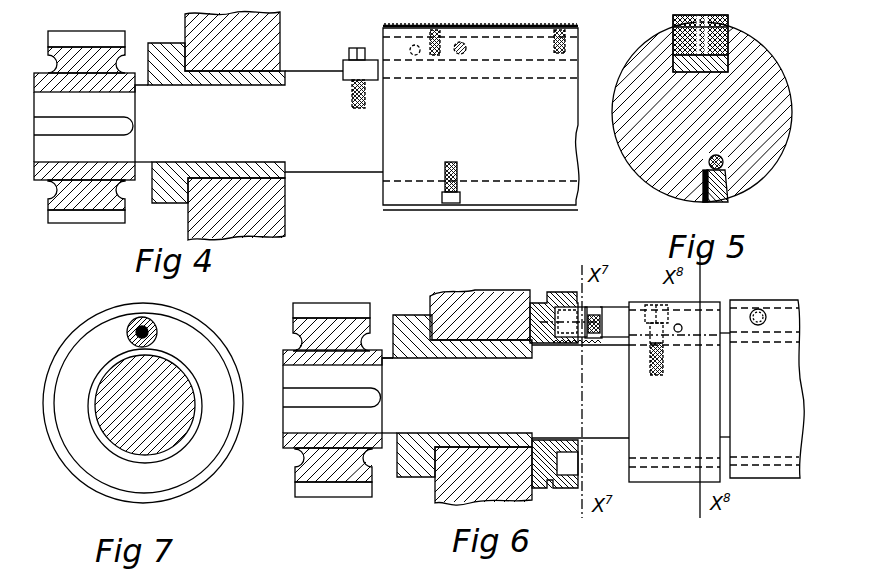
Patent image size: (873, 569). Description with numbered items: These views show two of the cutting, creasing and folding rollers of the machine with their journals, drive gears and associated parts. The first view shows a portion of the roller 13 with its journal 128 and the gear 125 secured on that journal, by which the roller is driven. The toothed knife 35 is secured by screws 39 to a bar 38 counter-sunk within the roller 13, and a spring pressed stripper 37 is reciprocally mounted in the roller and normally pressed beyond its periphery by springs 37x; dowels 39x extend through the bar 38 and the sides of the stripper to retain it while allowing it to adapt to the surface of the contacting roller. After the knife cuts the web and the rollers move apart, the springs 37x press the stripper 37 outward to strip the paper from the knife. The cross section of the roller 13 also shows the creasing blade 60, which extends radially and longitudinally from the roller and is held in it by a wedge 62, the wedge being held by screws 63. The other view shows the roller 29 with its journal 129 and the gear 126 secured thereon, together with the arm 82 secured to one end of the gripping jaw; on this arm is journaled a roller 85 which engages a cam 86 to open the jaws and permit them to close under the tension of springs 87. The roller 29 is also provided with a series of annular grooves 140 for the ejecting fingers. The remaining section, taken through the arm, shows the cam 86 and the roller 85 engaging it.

In FIG. 4, the gear 125 is at (64, 37).
In FIG. 4, the journal 128 is at (208, 125).
In FIG. 4, the roller 13 is at (578, 155).
In FIG. 5, the roller 13 is at (622, 155).
In FIG. 4, the toothed knife 35 is at (462, 27).
In FIG. 5, the toothed knife 35 is at (705, 16).
In FIG. 5, the spring pressed stripper 37 is at (724, 26).
In FIG. 4, the springs 37x is at (613, 18).
In FIG. 5, the springs 37x is at (676, 26).
In FIG. 5, the bar 38 is at (729, 68).
In FIG. 4, the screws 39 is at (470, 48).
In FIG. 4, the dowels 39x is at (412, 56).
In FIG. 5, the creasing blade 60 is at (703, 201).
In FIG. 5, the wedge 62 is at (730, 190).
In FIG. 4, the screws 63 is at (446, 203).
In FIG. 5, the screws 63 is at (715, 200).
In FIG. 6, the gear 126 is at (322, 311).
In FIG. 6, the journal 129 is at (332, 387).
In FIG. 7, the roller 85 is at (157, 332).
In FIG. 6, the roller 85 is at (557, 318).
In FIG. 7, the cam 86 is at (195, 374).
In FIG. 6, the cam 86 is at (563, 293).
In FIG. 6, the arm 82 is at (610, 313).
In FIG. 6, the roller 29 is at (663, 483).
In FIG. 6, the annular grooves 140 is at (722, 302).
In FIG. 6, the springs 87 is at (762, 312).